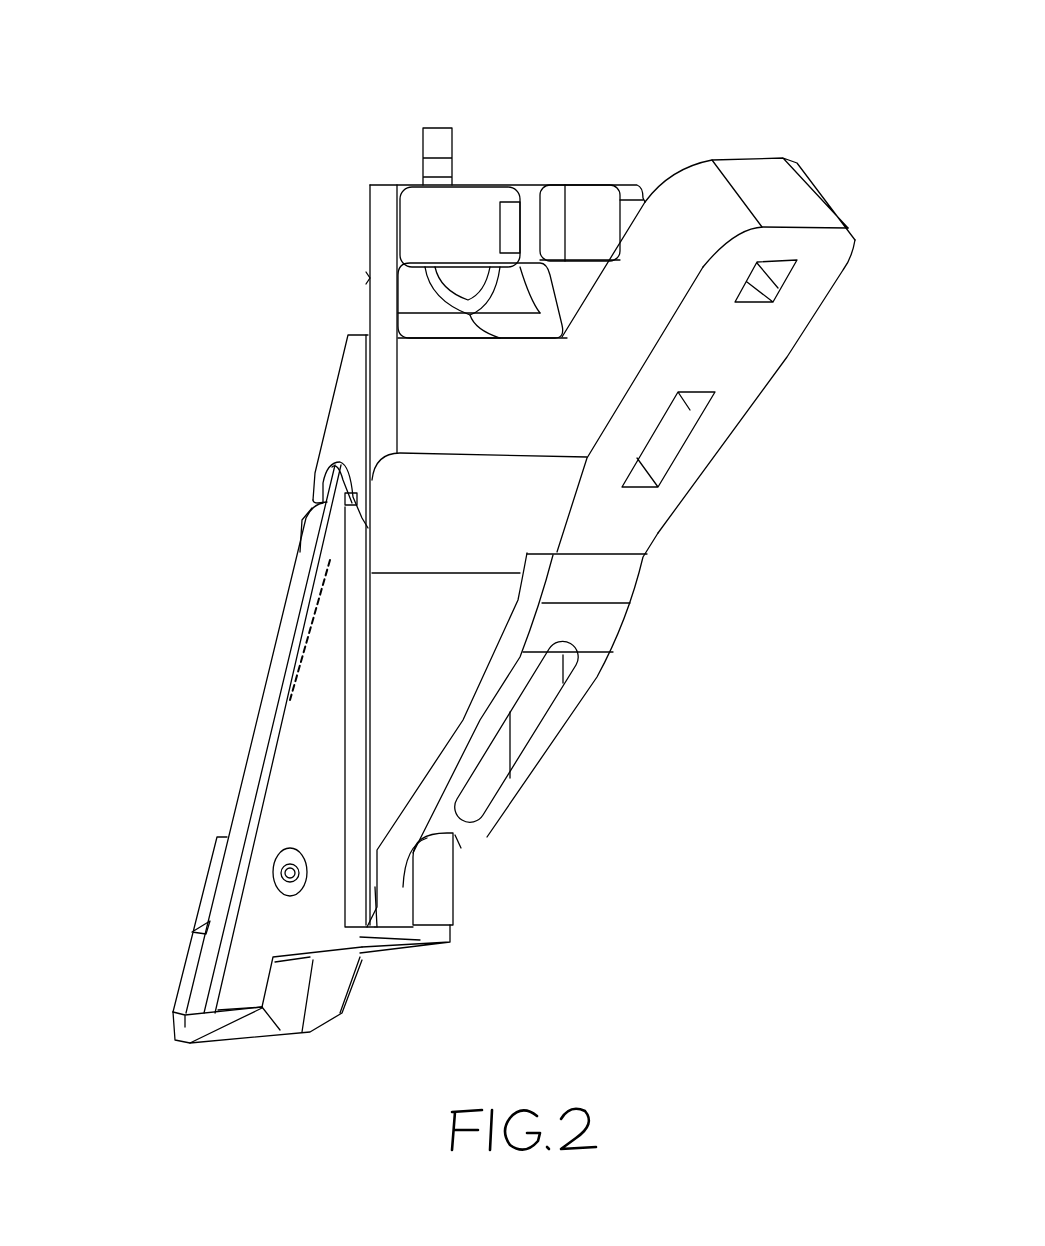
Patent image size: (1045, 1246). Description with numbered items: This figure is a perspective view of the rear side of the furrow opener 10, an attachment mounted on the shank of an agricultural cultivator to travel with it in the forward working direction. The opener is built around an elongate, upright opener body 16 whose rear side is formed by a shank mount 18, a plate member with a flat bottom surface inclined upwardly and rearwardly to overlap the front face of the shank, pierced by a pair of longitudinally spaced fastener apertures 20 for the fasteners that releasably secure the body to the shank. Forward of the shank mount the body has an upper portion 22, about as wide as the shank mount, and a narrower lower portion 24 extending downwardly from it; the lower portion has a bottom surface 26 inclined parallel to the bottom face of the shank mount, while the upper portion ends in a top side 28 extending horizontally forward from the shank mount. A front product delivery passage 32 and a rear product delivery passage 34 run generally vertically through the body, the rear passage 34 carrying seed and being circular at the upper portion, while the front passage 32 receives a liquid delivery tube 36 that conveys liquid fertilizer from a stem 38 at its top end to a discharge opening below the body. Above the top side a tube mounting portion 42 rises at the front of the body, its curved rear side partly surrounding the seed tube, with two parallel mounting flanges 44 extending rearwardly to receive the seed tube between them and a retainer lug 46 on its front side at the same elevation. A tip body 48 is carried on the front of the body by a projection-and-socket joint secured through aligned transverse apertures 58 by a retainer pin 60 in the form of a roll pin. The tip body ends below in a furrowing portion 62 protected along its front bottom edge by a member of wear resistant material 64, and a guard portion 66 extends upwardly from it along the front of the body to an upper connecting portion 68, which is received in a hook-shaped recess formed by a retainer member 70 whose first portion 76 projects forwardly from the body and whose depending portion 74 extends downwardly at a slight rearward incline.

The furrow opener 10 is at (199, 172).
The opener body 16 is at (605, 708).
The shank mount 18 is at (762, 372).
The fastener apertures 20 is at (780, 283).
The upper portion 22 is at (545, 418).
The lower portion 24 is at (437, 658).
The bottom surface 26 is at (485, 833).
The top side 28 is at (543, 323).
The front product delivery passage 32 is at (460, 848).
The rear product delivery passage 34 is at (530, 737).
The liquid delivery tube 36 is at (443, 905).
The stem 38 is at (432, 128).
The tube mounting portion 42 is at (382, 302).
The mounting flanges 44 is at (475, 213).
The retainer lug 46 is at (363, 277).
The tip body 48 is at (228, 627).
The transverse apertures 58 is at (285, 845).
The retainer pin 60 is at (282, 868).
The furrowing portion 62 is at (242, 997).
The member of wear resistant material 64 is at (180, 967).
The guard portion 66 is at (270, 690).
The upper connecting portion 68 is at (313, 480).
The retainer member 70 is at (342, 373).
The depending portion 74 is at (338, 463).
The first portion 76 is at (313, 500).